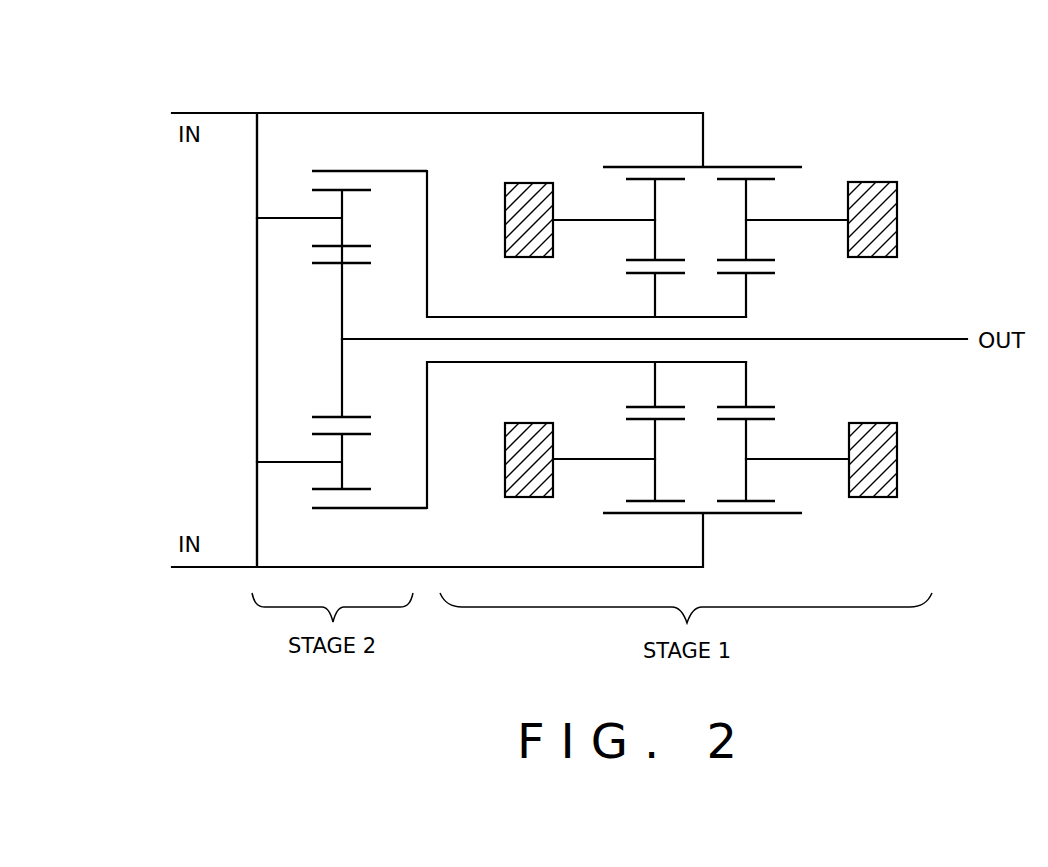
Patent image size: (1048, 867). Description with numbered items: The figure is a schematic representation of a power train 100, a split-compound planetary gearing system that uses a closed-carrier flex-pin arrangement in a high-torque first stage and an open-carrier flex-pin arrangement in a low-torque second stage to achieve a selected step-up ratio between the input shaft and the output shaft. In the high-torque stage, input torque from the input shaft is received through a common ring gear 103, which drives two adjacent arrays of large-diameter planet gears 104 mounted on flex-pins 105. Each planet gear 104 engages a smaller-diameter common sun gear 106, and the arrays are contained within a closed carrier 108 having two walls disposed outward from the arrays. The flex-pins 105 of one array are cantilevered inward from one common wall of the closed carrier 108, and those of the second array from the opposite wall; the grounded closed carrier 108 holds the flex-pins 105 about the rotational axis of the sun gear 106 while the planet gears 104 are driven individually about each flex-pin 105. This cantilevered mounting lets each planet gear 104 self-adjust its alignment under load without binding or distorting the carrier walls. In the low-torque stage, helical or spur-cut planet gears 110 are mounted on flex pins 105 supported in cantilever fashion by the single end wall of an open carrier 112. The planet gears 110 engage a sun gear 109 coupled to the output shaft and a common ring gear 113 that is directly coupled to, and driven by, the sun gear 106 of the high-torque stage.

The power train 100 is at (628, 39).
The common ring gear 103 is at (728, 167).
The planet gears 104 is at (742, 243).
The flex-pins 105 is at (300, 220).
The common sun gear 106 is at (710, 317).
The closed carrier 108 is at (545, 203).
The sun gear 109 is at (342, 397).
The planet gears 110 is at (342, 205).
The open carrier 112 is at (257, 325).
The ring gear 113 is at (342, 171).